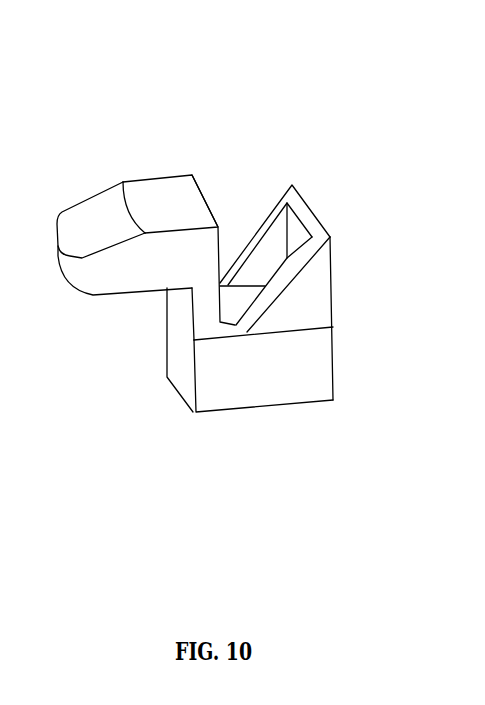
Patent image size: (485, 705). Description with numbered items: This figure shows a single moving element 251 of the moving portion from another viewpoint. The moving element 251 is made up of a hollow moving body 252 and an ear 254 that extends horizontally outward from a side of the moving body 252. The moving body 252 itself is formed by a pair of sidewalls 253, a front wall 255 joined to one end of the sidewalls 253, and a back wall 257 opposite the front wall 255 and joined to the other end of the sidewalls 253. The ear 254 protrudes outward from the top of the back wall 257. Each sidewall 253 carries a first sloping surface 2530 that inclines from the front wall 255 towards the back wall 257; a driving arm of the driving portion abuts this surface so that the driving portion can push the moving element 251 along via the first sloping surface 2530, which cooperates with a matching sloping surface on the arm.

The moving element 251 is at (231, 75).
The moving body 252 is at (313, 544).
The sidewall 253 is at (247, 380).
The ear 254 is at (94, 221).
The front wall 255 is at (335, 293).
The back wall 257 is at (182, 340).
The first sloping surface 2530 is at (263, 217).